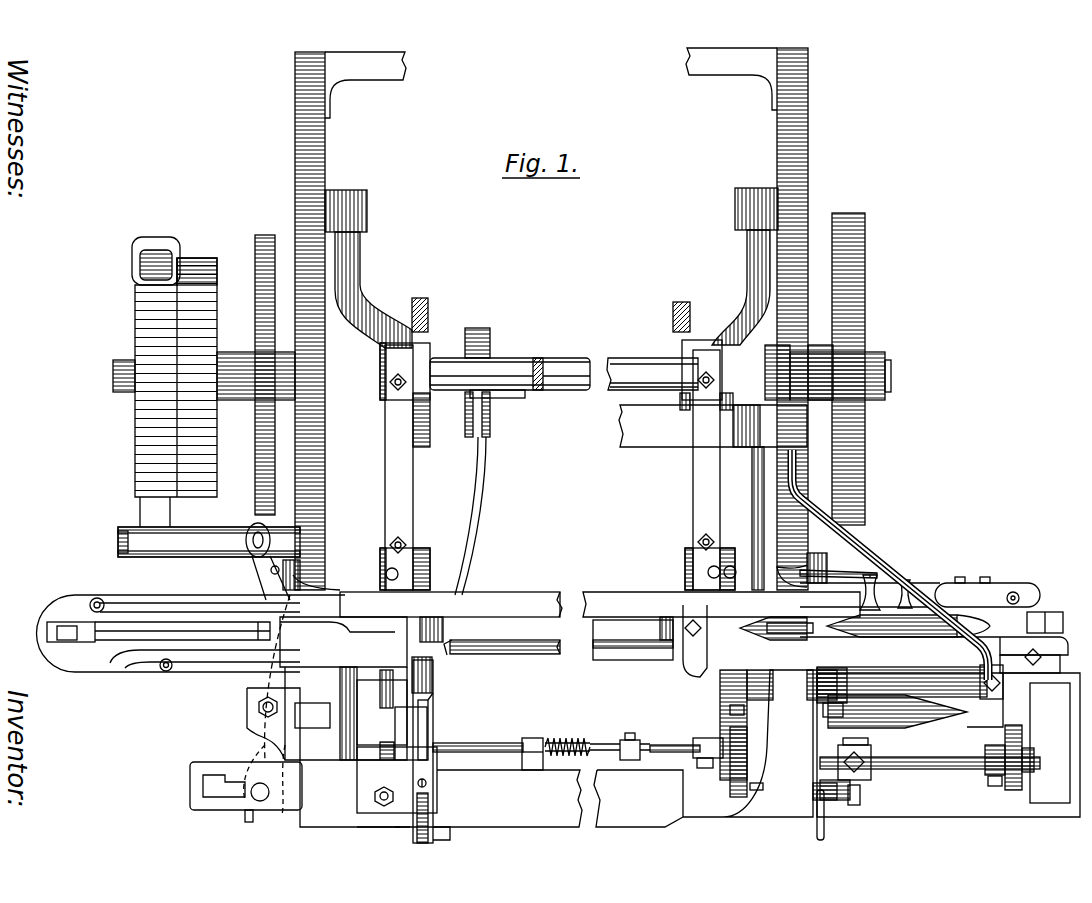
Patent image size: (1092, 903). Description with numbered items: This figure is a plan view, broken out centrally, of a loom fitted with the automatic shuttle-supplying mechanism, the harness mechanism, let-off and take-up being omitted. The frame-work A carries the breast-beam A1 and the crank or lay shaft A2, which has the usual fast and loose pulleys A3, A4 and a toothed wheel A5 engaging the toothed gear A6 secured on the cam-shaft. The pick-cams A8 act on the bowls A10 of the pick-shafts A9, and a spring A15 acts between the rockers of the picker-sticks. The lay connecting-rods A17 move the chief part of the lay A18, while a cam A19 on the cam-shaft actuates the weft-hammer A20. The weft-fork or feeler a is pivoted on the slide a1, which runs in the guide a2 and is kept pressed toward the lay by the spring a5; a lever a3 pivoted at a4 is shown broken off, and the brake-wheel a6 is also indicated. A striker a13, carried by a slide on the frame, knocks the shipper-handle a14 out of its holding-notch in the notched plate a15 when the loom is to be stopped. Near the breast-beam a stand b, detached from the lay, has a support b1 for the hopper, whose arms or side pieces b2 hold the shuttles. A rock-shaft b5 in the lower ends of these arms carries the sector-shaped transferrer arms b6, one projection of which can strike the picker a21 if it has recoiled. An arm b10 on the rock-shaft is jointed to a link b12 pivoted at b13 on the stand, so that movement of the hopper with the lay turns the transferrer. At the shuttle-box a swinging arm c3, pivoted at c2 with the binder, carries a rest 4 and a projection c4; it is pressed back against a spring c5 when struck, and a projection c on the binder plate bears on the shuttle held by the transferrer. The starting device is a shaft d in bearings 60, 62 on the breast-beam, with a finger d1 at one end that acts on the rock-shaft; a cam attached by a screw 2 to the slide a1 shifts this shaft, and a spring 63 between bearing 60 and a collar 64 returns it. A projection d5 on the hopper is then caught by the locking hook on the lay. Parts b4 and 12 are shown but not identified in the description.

The frame-work A is at (292, 163).
The crank or lay shaft A2 is at (525, 368).
The fast pulley A3 is at (135, 302).
The loose pulley A4 is at (210, 260).
The toothed wheel A5 is at (855, 340).
The toothed gear A6 is at (890, 237).
The pick-cams A8 is at (440, 300).
The pick-shafts A9 is at (380, 281).
The bowls A10 is at (432, 343).
The spring A15 is at (70, 625).
The lay connecting-rods A17 is at (572, 395).
The lay A18 is at (494, 636).
The cam A19 is at (492, 340).
The weft-hammer A20 is at (505, 494).
The breast-beam A1 is at (528, 808).
The weft-fork or feeler a is at (408, 686).
The slide a1 is at (272, 225).
The guide a2 is at (388, 732).
The lever a3 is at (432, 822).
The pivot a4 is at (378, 703).
The spring a5 is at (410, 749).
The brake-wheel a6 is at (683, 670).
The striker a13 is at (250, 742).
The shipper-handle a14 is at (248, 822).
The notched plate a15 is at (190, 770).
The picker a21 is at (1040, 612).
The stand b is at (796, 768).
The support b1 is at (950, 712).
The arms or side pieces b2 is at (730, 722).
The gear b4 is at (1015, 790).
The rock-shaft b5 is at (965, 770).
The arms b6 is at (730, 795).
The arm b10 is at (871, 775).
The link b12 is at (860, 790).
The pivot b13 is at (862, 805).
The projection c is at (894, 578).
The pin c2 is at (1016, 592).
The swinging arm c3 is at (950, 583).
The projection c4 is at (870, 618).
The spring c5 is at (866, 573).
The shaft d is at (478, 745).
The finger d1 is at (680, 741).
The projection d5 is at (700, 760).
The screw 2 is at (418, 789).
The rest 4 is at (432, 700).
The pin 12 is at (817, 833).
The bearing 60 is at (540, 738).
The bearing 62 is at (370, 770).
The spring 63 is at (585, 743).
The collar 64 is at (650, 740).